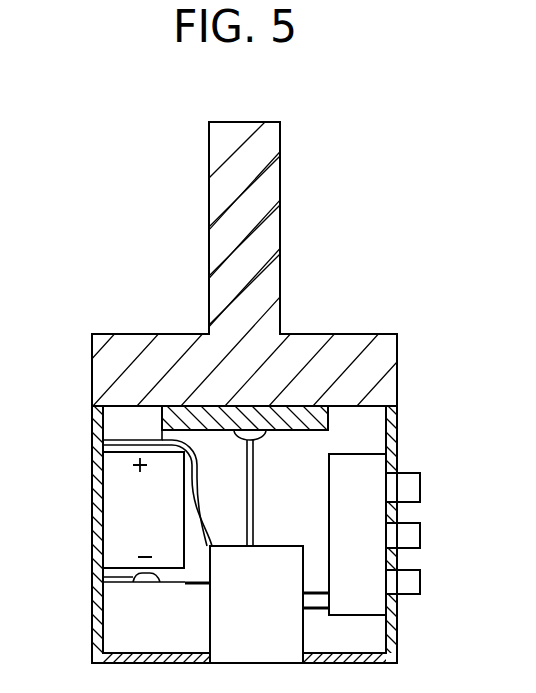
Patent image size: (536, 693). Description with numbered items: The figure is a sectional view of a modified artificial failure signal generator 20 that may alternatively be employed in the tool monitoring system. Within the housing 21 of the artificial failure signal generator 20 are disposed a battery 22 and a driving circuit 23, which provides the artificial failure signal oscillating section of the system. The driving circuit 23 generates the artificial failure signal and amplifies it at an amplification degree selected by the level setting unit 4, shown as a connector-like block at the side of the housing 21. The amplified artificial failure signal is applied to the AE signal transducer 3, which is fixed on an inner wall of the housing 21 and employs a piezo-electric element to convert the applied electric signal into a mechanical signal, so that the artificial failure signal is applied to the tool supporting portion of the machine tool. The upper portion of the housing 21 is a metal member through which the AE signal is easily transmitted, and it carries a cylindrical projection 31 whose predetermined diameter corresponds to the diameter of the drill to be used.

The cylindrical projection 31 is at (268, 235).
The AE signal transducer 3 is at (313, 418).
The artificial failure signal generator 20 is at (424, 431).
The housing 21 is at (95, 428).
The battery 22 is at (125, 523).
The driving circuit 23 is at (267, 605).
The level setting unit 4 is at (360, 560).